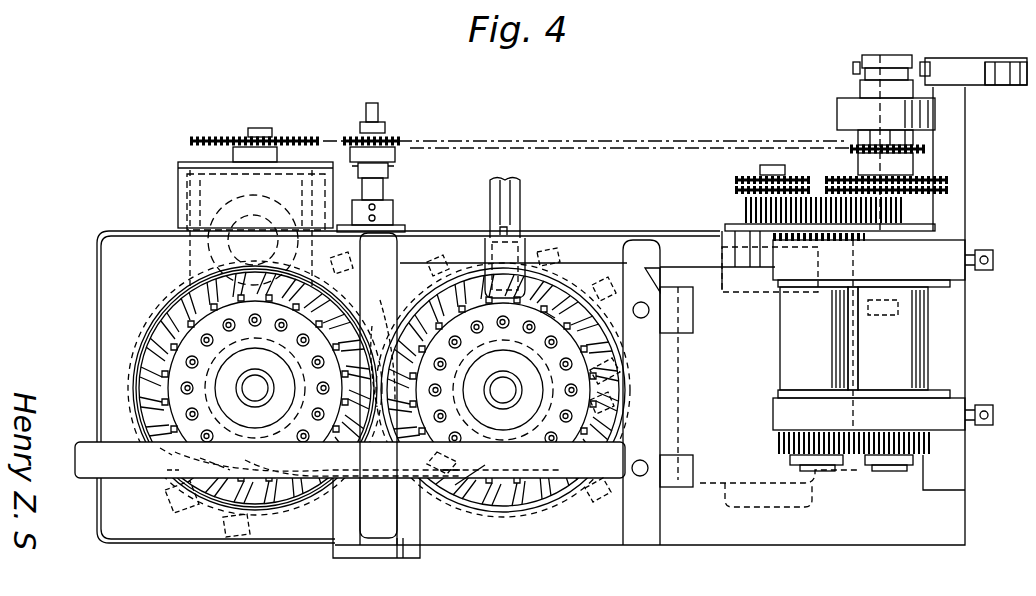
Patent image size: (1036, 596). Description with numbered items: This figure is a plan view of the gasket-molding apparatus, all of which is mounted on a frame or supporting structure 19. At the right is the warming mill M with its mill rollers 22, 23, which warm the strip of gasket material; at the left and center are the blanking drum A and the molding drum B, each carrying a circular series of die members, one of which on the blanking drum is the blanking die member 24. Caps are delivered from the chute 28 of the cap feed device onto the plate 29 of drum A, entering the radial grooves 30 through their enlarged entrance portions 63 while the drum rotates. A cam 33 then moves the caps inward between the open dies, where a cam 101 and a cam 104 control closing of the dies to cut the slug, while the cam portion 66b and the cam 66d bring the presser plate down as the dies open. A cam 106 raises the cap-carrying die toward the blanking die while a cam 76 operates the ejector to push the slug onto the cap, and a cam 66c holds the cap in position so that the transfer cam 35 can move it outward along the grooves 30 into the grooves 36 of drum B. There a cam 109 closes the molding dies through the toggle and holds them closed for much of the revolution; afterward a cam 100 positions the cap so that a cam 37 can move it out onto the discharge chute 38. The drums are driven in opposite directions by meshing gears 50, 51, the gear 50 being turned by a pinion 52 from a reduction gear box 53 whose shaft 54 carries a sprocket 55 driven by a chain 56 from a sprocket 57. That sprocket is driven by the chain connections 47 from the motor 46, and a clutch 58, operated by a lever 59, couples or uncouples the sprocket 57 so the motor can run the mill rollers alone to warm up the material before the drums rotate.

The frame or supporting structure 19 is at (863, 535).
The mill roller 22 is at (798, 338).
The mill roller 23 is at (917, 345).
The blanking die member 24 is at (612, 398).
The chute 28 is at (512, 196).
The plate 29 is at (133, 367).
The radial grooves 30 is at (502, 493).
The cam 33 is at (658, 392).
The cam 35 is at (393, 352).
The grooves 36 is at (257, 497).
The cam 37 is at (307, 453).
The chute 38 is at (403, 552).
The motor 46 is at (717, 480).
The chain connections 47 is at (838, 171).
The gear 50 is at (165, 310).
The gear 51 is at (381, 342).
The pinion 52 is at (233, 223).
The reduction gear box 53 is at (215, 198).
The shaft 54 is at (258, 130).
The sprocket 55 is at (215, 137).
The chain 56 is at (460, 139).
The sprocket 57 is at (850, 147).
The clutch 58 is at (833, 88).
The lever 59 is at (1010, 63).
The enlarged entrance portions 63 is at (413, 317).
The cam portion 66b is at (551, 307).
The cam 66c is at (443, 462).
The cam 66d is at (620, 383).
The cam 76 is at (515, 465).
The cam 100 is at (203, 461).
The cam 101 is at (463, 262).
The cam 104 is at (572, 247).
The cam 106 is at (568, 527).
The cam 109 is at (167, 468).
The blanking drum A is at (470, 521).
The molding drum B is at (156, 284).
The warming mill M is at (941, 325).